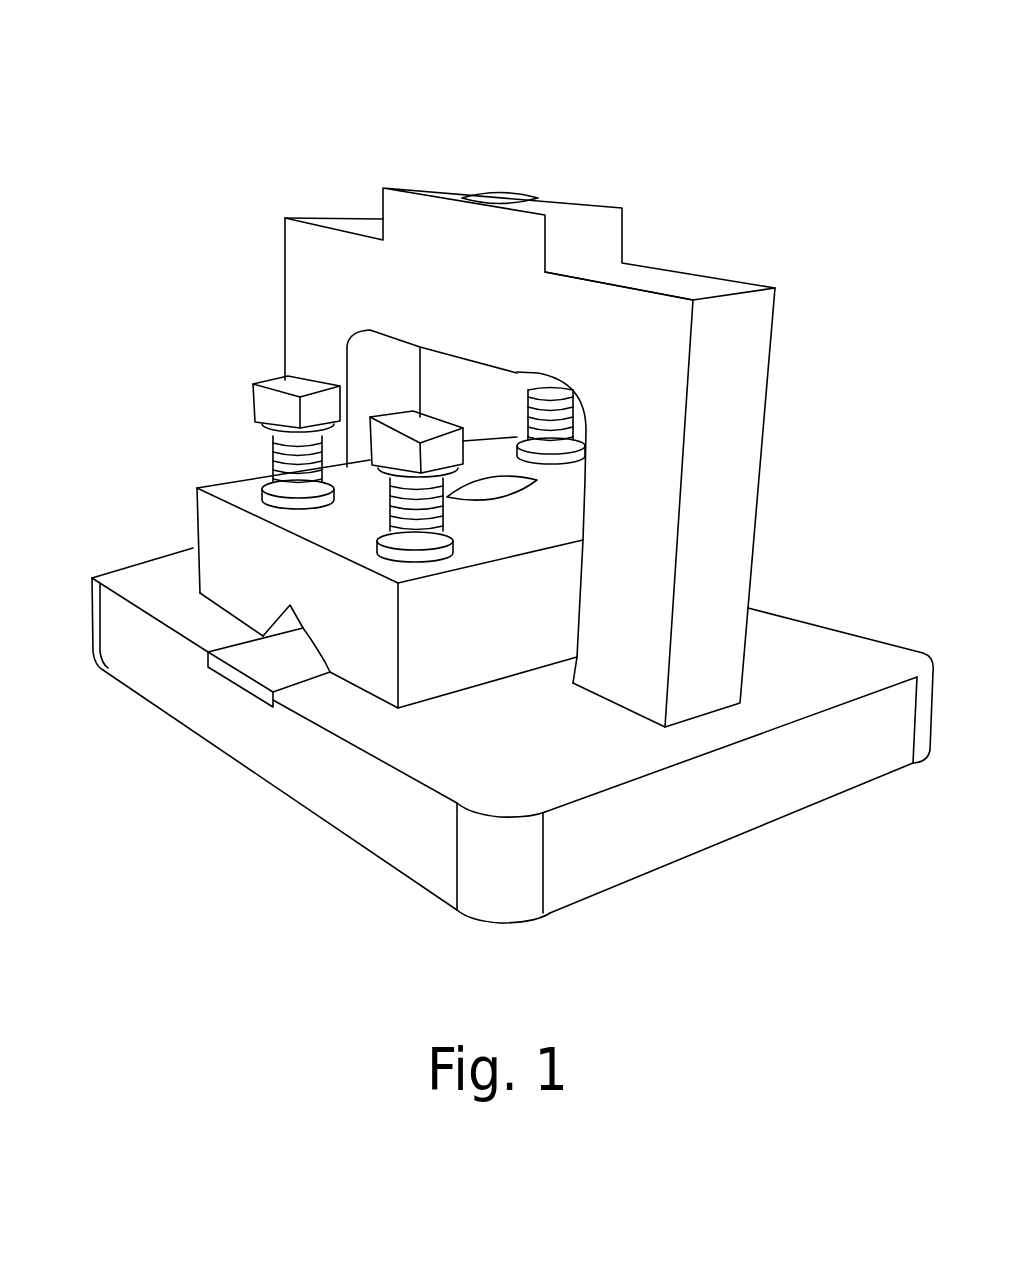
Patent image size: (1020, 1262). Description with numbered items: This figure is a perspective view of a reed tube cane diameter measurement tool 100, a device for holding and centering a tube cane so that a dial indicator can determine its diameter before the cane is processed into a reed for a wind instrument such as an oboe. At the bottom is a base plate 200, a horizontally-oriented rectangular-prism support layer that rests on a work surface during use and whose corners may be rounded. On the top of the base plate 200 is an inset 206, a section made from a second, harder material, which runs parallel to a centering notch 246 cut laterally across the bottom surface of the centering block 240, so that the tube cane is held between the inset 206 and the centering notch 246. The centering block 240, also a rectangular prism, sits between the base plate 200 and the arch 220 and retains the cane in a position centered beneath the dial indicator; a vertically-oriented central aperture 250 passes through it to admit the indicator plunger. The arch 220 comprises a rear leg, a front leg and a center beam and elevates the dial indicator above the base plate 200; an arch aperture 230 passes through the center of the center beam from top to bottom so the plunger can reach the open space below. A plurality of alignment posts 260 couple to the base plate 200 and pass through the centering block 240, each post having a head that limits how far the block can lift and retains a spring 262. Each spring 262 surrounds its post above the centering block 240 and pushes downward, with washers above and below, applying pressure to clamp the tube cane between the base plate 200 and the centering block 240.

The reed tube cane diameter measurement tool 100 is at (793, 100).
The base plate 200 is at (818, 783).
The inset 206 is at (237, 686).
The arch 220 is at (298, 268).
The arch aperture 230 is at (484, 192).
The centering block 240 is at (233, 524).
The centering notch 246 is at (200, 593).
The central aperture 250 is at (490, 499).
The alignment posts 260 is at (517, 373).
The spring 262 is at (403, 522).